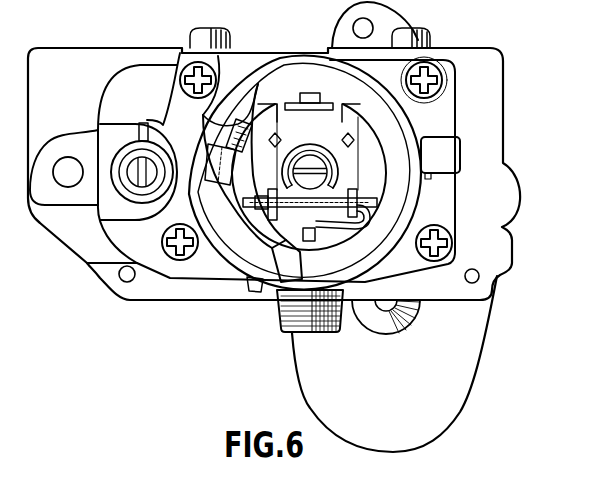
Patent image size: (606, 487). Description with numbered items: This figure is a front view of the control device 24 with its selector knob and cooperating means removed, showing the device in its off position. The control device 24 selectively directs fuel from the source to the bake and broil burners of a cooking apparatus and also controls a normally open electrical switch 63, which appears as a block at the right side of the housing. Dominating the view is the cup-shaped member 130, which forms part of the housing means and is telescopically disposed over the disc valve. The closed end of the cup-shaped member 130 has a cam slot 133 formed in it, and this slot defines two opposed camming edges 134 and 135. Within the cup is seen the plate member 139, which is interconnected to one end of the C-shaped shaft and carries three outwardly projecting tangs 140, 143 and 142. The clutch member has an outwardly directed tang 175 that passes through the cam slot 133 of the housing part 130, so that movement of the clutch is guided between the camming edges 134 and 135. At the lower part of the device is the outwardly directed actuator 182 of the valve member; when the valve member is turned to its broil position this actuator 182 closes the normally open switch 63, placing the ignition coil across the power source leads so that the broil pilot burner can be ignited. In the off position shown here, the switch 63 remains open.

The control device 24 is at (513, 58).
The normally opened electrical switch 63 is at (460, 152).
The cup-shaped member 130 is at (283, 54).
The cam slot 133 is at (233, 193).
The camming edge 134 is at (212, 207).
The camming edge 135 is at (243, 266).
The plate member 139 is at (370, 148).
The outwardly projecting tang 140 is at (258, 84).
The outwardly projecting tang 142 is at (226, 133).
The outwardly projecting tang 143 is at (300, 270).
The outwardly directed tang 175 is at (203, 115).
The actuator 182 is at (248, 302).